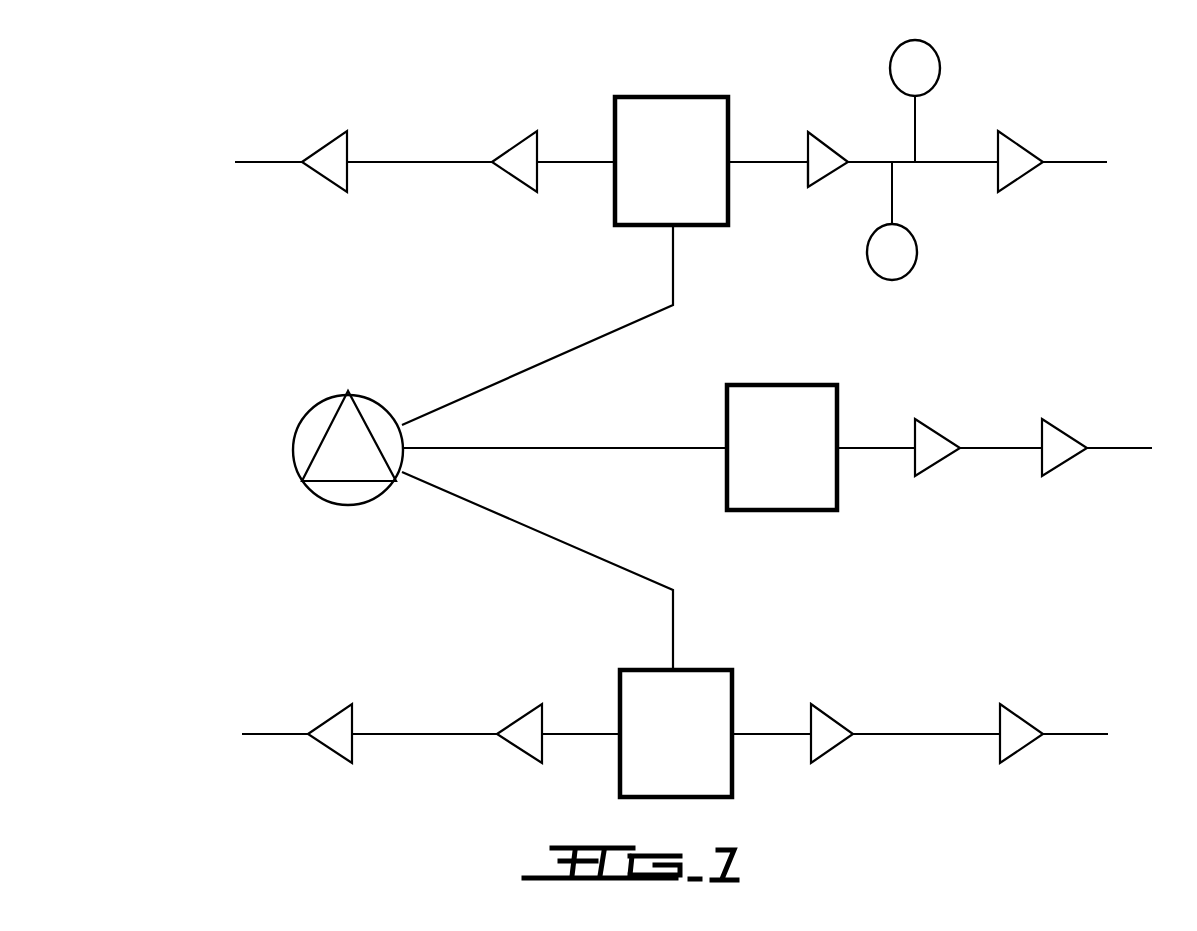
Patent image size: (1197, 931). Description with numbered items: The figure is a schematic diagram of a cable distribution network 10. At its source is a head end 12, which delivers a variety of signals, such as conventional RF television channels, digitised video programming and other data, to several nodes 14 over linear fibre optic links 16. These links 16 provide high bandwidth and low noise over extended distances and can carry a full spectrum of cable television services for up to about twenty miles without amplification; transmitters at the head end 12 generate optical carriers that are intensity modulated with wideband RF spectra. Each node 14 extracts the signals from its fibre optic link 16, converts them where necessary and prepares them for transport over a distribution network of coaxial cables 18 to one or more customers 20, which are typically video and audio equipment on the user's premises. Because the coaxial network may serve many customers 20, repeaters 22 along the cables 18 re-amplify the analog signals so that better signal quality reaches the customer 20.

The cable distribution network 10 is at (228, 308).
The head end 12 is at (350, 505).
The node 14 is at (673, 97).
The linear fibre optic link 16 is at (592, 345).
The coaxial cable 18 is at (867, 162).
The customer 20 is at (912, 228).
The repeater 22 is at (821, 185).